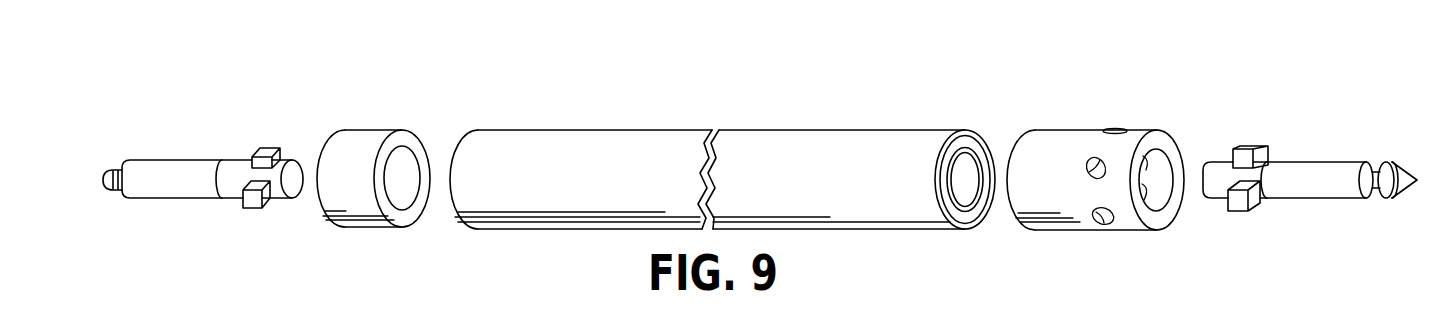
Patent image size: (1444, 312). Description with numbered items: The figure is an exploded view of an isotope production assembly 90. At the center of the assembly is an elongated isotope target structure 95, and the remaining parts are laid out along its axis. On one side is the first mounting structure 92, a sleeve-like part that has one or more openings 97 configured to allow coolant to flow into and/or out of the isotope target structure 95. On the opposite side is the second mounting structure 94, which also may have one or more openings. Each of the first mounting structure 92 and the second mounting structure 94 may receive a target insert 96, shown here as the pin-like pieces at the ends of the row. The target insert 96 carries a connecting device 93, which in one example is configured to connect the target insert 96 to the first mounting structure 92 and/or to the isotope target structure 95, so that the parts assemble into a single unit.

The isotope production assembly 90 is at (503, 97).
The first mounting structure 92 is at (1076, 130).
The connecting device 93 is at (1252, 148).
The second mounting structure 94 is at (375, 130).
The isotope target structure 95 is at (660, 130).
The target insert 96 is at (1315, 199).
The openings 97 is at (1104, 224).